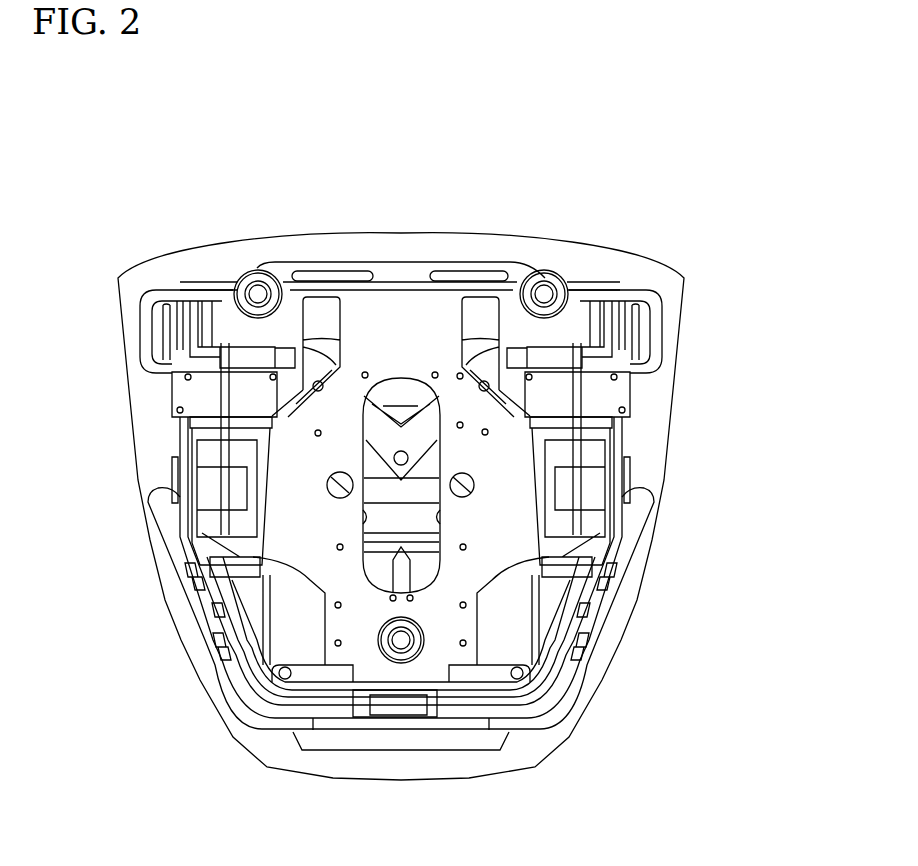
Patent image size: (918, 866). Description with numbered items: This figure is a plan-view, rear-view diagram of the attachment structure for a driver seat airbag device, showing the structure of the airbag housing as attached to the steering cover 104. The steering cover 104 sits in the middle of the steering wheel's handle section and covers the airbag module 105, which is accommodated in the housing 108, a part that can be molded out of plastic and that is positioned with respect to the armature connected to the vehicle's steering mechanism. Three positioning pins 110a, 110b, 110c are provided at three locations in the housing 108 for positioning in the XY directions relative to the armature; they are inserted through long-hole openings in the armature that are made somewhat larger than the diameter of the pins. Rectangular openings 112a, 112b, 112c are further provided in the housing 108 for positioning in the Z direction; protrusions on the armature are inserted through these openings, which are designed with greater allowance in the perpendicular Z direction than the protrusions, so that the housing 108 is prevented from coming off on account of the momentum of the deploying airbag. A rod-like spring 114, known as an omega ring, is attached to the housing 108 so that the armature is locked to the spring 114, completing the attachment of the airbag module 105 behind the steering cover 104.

The steering cover 104 is at (688, 286).
The airbag module 105 is at (318, 348).
The housing 108 is at (637, 552).
The positioning pin 110a is at (258, 292).
The positioning pin 110b is at (548, 292).
The positioning pin 110c is at (401, 660).
The rectangular opening 112a is at (203, 330).
The rectangular opening 112b is at (598, 330).
The rectangular opening 112c is at (368, 705).
The spring 114 is at (577, 486).